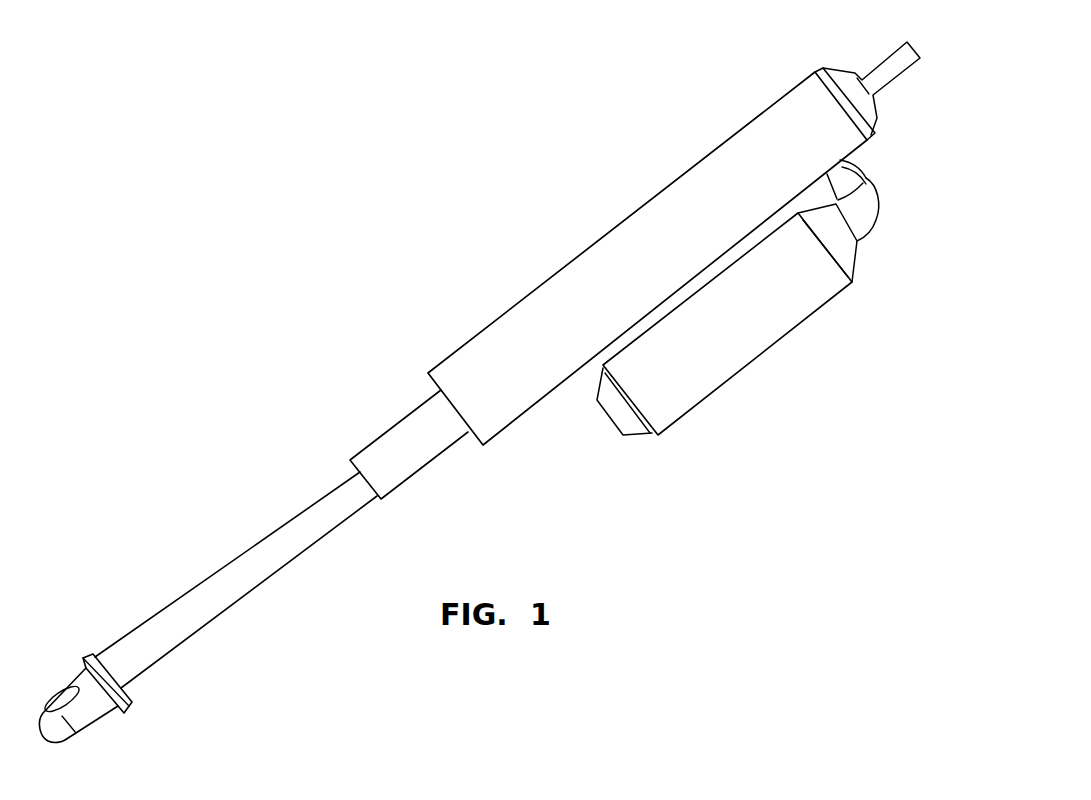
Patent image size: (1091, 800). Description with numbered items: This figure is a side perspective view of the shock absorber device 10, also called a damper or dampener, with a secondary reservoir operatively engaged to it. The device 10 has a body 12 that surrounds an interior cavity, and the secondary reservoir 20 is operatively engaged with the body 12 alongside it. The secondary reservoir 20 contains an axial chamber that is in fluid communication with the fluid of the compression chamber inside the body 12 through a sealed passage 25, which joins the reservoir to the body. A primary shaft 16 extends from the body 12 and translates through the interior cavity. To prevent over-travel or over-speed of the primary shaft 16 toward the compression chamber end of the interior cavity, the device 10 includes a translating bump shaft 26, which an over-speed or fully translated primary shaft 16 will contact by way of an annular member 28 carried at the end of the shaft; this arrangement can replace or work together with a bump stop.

The shock absorber device 10 is at (571, 211).
The body 12 is at (552, 300).
The primary shaft 16 is at (256, 562).
The secondary reservoir 20 is at (773, 313).
The sealed passage 25 is at (860, 212).
The translating bump shaft 26 is at (390, 442).
The annular member 28 is at (92, 665).